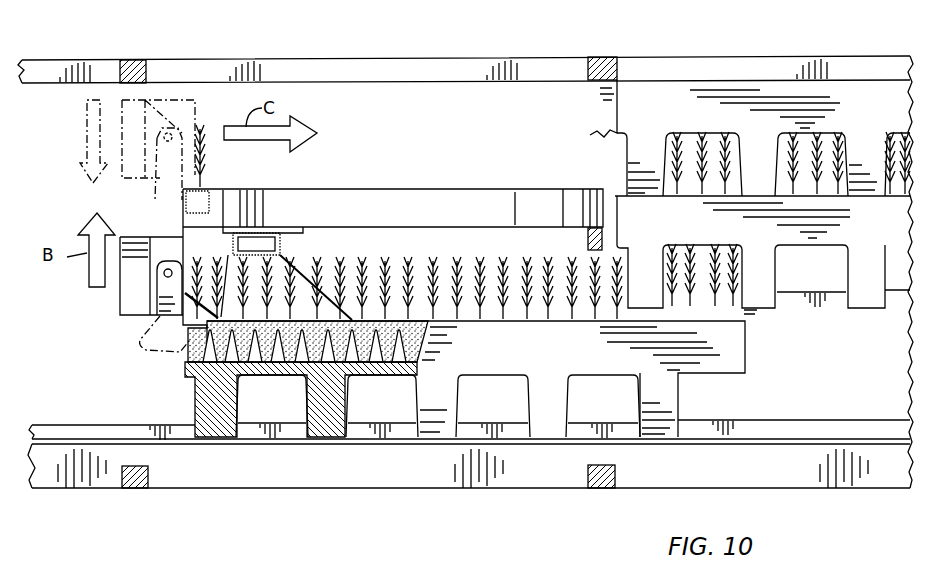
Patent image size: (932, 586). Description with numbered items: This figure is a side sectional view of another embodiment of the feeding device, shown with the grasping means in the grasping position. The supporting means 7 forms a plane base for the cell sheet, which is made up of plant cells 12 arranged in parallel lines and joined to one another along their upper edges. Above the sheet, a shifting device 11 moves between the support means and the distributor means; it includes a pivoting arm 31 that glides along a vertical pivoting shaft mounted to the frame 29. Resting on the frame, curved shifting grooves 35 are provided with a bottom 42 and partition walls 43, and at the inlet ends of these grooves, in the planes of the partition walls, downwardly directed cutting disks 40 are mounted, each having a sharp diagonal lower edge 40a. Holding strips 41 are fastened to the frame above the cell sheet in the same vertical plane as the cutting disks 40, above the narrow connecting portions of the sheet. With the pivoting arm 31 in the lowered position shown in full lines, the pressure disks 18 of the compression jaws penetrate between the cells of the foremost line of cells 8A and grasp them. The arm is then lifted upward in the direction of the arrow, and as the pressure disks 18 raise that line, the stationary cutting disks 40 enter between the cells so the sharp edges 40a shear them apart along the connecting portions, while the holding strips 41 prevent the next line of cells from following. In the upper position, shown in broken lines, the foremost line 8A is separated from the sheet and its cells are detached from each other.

The supporting means 7 is at (300, 410).
The foremost line of cells 8A is at (185, 358).
The shifting device 11 is at (120, 132).
The plant cells 12 is at (277, 352).
The pressure disks 18 is at (158, 318).
The frame 29 is at (107, 75).
The pivoting arm 31 is at (133, 242).
The shifting grooves 35 is at (377, 206).
The cutting disks 40 is at (208, 258).
The diagonal lower edge 40a is at (190, 300).
The holding strips 41 is at (277, 297).
The bottom 42 is at (229, 190).
The partition walls 43 is at (446, 198).